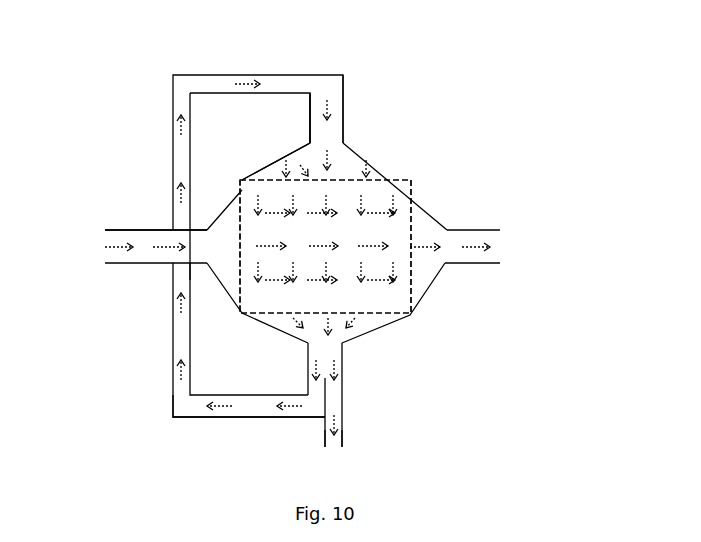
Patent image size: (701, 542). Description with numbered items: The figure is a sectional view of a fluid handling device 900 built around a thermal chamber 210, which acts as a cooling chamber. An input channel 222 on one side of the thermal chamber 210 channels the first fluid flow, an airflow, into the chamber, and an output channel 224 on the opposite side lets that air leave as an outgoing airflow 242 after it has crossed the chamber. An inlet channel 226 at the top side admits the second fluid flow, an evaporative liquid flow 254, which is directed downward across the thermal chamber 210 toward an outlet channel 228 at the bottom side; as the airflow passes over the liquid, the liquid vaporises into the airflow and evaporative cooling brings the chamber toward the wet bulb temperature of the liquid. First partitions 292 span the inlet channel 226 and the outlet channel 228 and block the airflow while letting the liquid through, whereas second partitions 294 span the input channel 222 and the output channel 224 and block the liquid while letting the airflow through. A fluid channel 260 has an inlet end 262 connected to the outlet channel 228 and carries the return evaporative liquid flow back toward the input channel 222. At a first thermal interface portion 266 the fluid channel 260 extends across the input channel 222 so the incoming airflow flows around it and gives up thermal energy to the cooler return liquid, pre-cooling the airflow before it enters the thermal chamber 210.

The heat exchange system 900 is at (632, 35).
The input channel 222 is at (152, 230).
The inlet channel 226 is at (310, 130).
The first partitions 292 is at (386, 178).
The thermal chamber 210 is at (413, 188).
The second partitions 294 is at (241, 197).
The outlet flow 242 is at (470, 230).
The output channel 224 is at (480, 263).
The inlet end 262 is at (308, 393).
The first thermal interface portion 266 is at (201, 279).
The fluid channel 260 is at (173, 404).
The outlet channel 228 is at (344, 400).
The evaporative liquid flow 254 is at (342, 427).